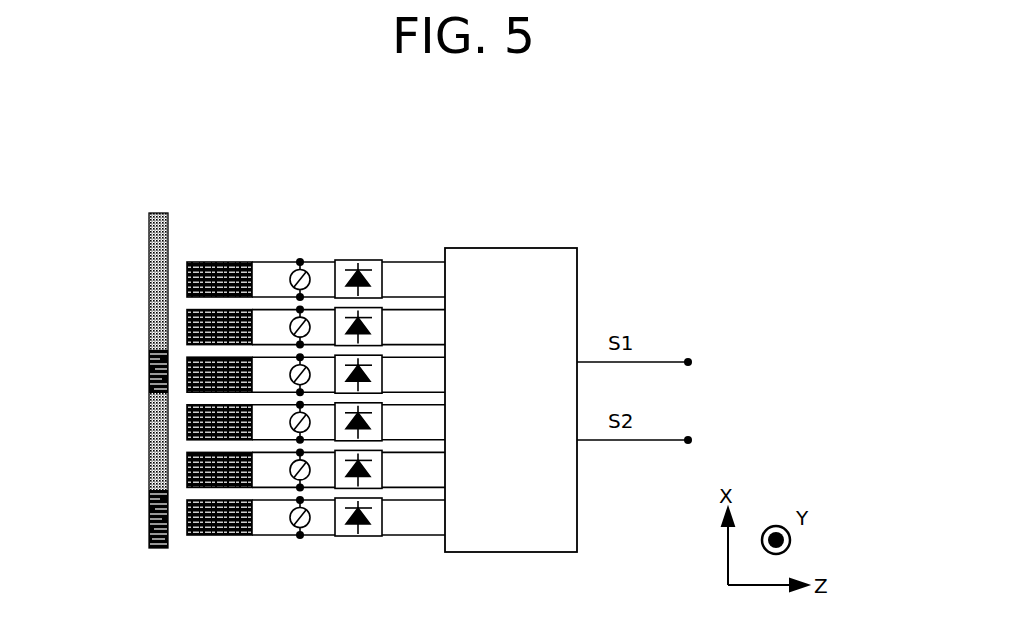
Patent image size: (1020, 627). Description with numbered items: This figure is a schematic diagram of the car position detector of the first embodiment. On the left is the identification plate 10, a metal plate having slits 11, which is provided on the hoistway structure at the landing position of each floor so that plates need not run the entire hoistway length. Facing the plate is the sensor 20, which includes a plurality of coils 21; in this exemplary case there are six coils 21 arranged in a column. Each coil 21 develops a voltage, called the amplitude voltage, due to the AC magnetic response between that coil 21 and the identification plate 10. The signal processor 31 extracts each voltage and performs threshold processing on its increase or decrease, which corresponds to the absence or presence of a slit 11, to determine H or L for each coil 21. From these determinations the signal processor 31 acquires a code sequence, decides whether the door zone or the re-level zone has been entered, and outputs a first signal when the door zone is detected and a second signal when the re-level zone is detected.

The identification plate 10 is at (158, 310).
The slit 11 is at (106, 449).
The sensor 20 is at (410, 205).
The coil 21 is at (225, 262).
The signal processor 31 is at (502, 246).